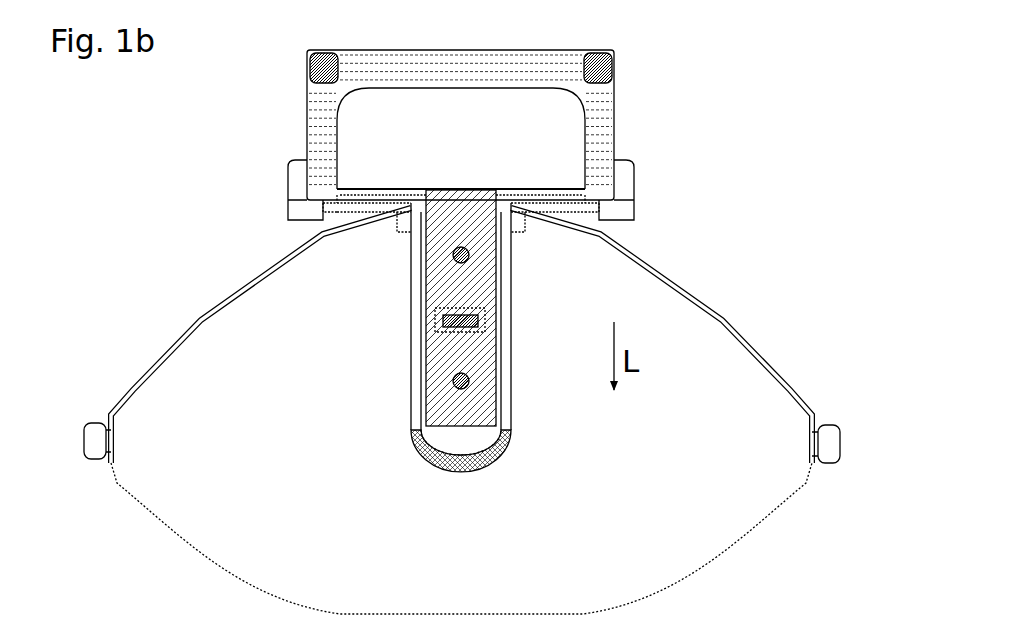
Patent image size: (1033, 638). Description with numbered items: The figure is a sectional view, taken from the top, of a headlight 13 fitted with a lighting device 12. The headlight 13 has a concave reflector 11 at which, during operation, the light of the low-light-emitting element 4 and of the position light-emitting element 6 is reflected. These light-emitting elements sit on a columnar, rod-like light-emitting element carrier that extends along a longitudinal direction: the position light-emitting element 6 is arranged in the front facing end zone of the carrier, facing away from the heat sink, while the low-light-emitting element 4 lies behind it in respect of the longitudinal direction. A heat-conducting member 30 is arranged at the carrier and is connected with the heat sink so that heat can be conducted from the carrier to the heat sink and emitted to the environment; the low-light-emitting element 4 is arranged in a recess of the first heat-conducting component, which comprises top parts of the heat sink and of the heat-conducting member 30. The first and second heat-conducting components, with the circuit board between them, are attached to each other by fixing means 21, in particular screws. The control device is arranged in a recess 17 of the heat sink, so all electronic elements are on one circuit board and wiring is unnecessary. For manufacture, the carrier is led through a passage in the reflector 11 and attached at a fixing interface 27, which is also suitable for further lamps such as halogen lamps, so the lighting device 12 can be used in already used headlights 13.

The low-light-emitting element 4 is at (473, 322).
The position light-emitting element 6 is at (458, 438).
The reflector 11 is at (728, 318).
The lighting device 12 is at (367, 426).
The headlight 13 is at (466, 400).
The recess 17 is at (556, 147).
The fixing means 21 is at (318, 60).
The fixing interface 27 is at (272, 214).
The heat-conducting member 30 is at (425, 357).